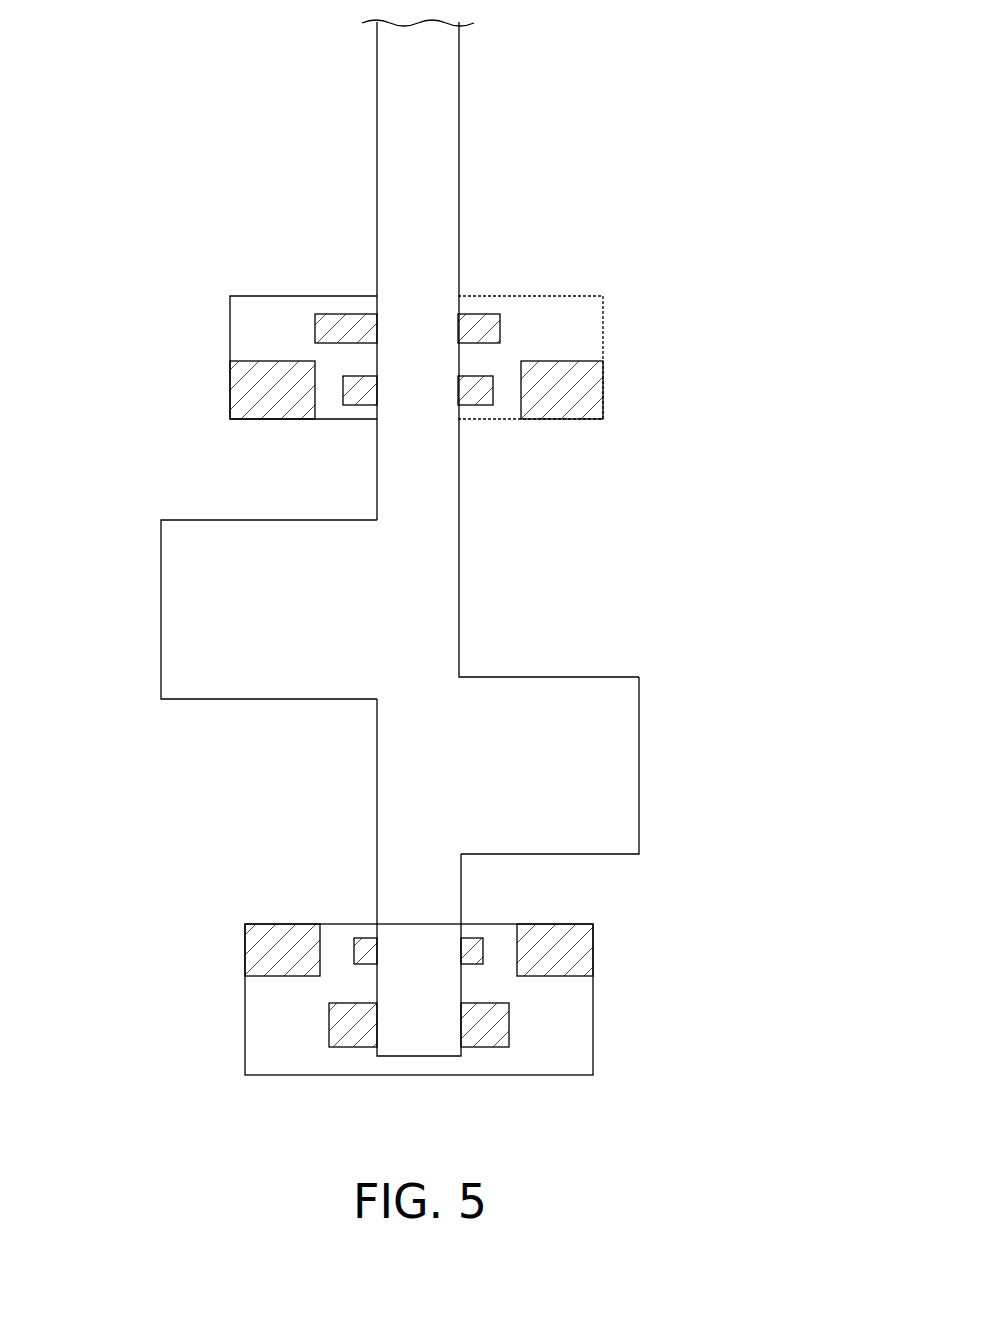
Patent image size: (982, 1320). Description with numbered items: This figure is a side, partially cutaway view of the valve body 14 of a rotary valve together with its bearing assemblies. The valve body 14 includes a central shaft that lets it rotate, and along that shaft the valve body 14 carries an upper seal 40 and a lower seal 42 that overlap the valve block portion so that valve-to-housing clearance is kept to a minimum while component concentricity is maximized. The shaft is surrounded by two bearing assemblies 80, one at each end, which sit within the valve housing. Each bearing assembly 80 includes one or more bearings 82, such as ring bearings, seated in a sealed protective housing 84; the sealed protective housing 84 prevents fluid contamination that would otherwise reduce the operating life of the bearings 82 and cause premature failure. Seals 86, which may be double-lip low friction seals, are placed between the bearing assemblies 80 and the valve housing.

The valve body 14 is at (465, 683).
The upper seal 40 is at (180, 578).
The lower seal 42 is at (615, 775).
The bearing assembly 80 is at (415, 683).
The bearing 82 is at (493, 388).
The sealed protective housing 84 is at (243, 342).
The seal 86 is at (565, 398).